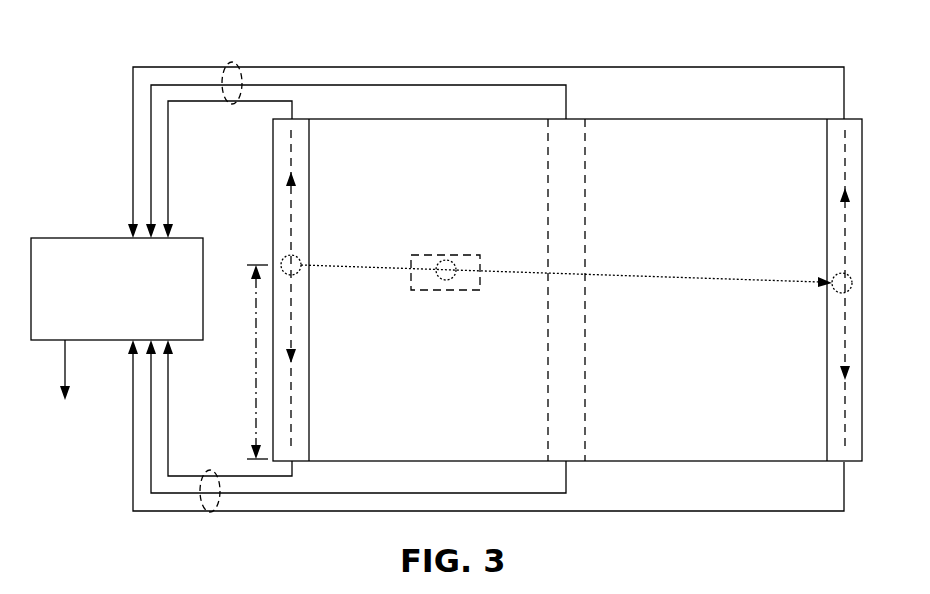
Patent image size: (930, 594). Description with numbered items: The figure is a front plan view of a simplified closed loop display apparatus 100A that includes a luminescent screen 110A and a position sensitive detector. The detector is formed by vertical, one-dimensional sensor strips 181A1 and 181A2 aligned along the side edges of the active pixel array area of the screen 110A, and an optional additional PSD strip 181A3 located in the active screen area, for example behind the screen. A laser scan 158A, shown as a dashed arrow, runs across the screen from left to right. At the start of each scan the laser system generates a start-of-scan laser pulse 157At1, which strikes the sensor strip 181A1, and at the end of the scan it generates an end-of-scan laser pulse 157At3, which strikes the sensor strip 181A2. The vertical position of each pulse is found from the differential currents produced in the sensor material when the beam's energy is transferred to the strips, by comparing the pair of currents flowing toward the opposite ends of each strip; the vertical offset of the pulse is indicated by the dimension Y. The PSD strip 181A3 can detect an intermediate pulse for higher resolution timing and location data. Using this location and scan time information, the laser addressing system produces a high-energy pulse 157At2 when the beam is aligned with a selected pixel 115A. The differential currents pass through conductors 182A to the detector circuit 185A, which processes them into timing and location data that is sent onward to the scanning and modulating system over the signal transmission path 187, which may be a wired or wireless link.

The closed loop display apparatus 100A is at (162, 48).
The detector circuit 185A is at (87, 226).
The signal transmission path 187 is at (65, 362).
The conductors 182A is at (238, 62).
The luminescent screen 110A is at (455, 186).
The sensor strip 181A1 is at (282, 135).
The sensor strip 181A2 is at (836, 128).
The PSD strip 181A3 is at (583, 195).
The start-of-scan laser pulse 157At1 is at (282, 260).
The high-energy pulse 157At2 is at (440, 268).
The end-of-scan laser pulse 157At3 is at (830, 276).
The selected pixel 115A is at (478, 255).
The laser scan 158A is at (667, 277).
The Y dimension Y is at (256, 336).